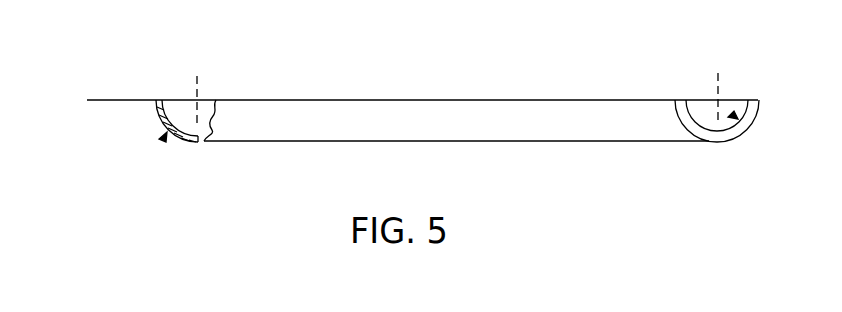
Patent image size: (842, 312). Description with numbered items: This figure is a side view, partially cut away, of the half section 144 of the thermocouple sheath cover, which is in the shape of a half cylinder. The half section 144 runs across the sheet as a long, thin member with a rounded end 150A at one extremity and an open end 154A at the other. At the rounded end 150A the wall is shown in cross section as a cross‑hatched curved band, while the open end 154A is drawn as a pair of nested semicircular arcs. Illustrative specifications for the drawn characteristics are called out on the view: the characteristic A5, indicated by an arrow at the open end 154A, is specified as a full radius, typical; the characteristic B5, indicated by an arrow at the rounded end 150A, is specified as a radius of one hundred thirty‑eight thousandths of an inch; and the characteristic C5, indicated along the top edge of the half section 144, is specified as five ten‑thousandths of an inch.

The half section 144 is at (533, 160).
The rounded end 150A is at (156, 99).
The open end 154A is at (746, 124).
The full radius characteristic A5 is at (673, 77).
The radius characteristic B5 is at (107, 172).
The thickness characteristic C5 is at (105, 102).